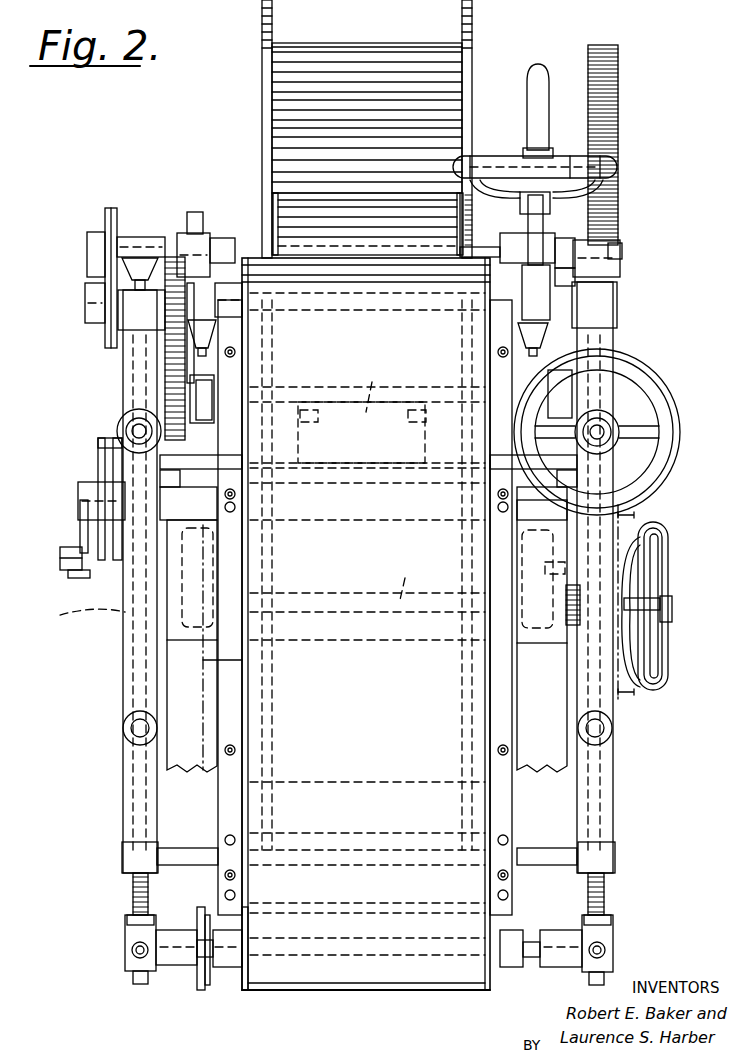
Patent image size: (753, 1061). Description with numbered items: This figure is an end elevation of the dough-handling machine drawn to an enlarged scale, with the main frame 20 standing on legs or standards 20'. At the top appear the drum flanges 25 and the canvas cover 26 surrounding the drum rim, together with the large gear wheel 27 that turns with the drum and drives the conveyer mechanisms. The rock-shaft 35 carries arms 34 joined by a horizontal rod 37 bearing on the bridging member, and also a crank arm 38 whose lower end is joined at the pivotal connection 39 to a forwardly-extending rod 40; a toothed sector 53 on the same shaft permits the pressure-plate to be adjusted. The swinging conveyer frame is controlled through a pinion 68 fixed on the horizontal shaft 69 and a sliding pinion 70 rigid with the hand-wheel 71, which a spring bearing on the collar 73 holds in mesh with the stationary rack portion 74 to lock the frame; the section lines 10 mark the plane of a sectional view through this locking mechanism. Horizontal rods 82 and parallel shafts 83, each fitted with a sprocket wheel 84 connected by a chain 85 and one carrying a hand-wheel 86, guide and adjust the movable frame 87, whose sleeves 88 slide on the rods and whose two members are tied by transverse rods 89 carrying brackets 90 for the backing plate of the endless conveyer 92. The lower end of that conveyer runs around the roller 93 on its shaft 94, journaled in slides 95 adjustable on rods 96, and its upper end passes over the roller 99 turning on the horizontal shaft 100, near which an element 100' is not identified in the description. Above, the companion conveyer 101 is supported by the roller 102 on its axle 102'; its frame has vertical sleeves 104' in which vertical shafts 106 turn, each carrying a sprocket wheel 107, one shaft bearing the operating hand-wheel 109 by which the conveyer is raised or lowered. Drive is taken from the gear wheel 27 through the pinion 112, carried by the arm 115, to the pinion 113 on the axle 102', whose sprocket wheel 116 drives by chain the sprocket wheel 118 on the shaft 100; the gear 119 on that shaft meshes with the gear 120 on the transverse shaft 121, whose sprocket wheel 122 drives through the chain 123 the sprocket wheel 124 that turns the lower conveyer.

The section line 10 is at (635, 608).
The frame 20 is at (322, 585).
The legs or standards 20' is at (367, 648).
The flanges 25 is at (272, 16).
The cover 26 is at (348, 45).
The large gear wheel 27 is at (618, 80).
The arms 34 is at (305, 434).
The rock-shaft 35 is at (85, 488).
The horizontal rod 37 is at (371, 385).
The crank arm 38 is at (80, 522).
The pivotal connection 39 is at (60, 556).
The forwardly-extending rod 40 is at (75, 572).
The toothed sector 53 is at (98, 458).
The pinion 68 is at (77, 614).
The horizontal shaft 69 is at (412, 579).
The pinion 70 is at (572, 612).
The hand-wheel 71 is at (668, 572).
The collar 73 is at (672, 610).
The stationary rack portion 74 is at (560, 553).
The horizontal rods 82 is at (136, 732).
The horizontal shafts 83 is at (135, 430).
The sprocket wheel 84 is at (120, 420).
The chain 85 is at (338, 462).
The hand-wheel 86 is at (655, 382).
The frame 87 is at (123, 356).
The sleeves 88 is at (124, 722).
The transverse rods 89 is at (182, 478).
The brackets 90 is at (250, 462).
The endless conveyer 92 is at (336, 990).
The pulley or roller 93 is at (244, 975).
The shaft 94 is at (198, 965).
The slides 95 is at (125, 944).
The rods 96 is at (133, 888).
The pulley or roller 99 is at (250, 340).
The shaft 100 is at (67, 303).
The nozzle tip 100' is at (279, 310).
The companion conveyer 101 is at (388, 225).
The roller 102 is at (180, 188).
The shaft or axle 102' is at (168, 309).
The vertical sleeves 104' is at (632, 253).
The vertical shaft 106 is at (200, 212).
The sprocket wheel 107 is at (226, 252).
The operating hand-wheel 109 is at (512, 150).
The pinion 112 is at (615, 143).
The pinion 113 is at (622, 250).
The arm 115 is at (592, 222).
The sprocket wheel 116 is at (112, 208).
The sprocket wheel 118 is at (87, 268).
The gear 119 is at (198, 240).
The gear 120 is at (175, 372).
The transverse shaft 121 is at (430, 395).
The sprocket wheel 122 is at (250, 405).
The chain 123 is at (250, 660).
The sprocket wheel 124 is at (204, 990).